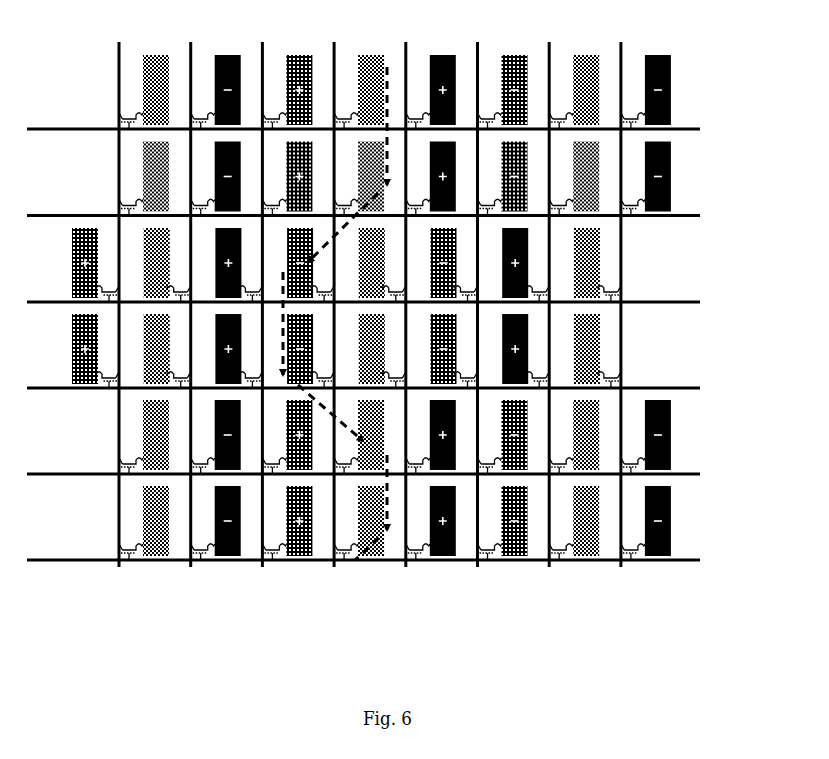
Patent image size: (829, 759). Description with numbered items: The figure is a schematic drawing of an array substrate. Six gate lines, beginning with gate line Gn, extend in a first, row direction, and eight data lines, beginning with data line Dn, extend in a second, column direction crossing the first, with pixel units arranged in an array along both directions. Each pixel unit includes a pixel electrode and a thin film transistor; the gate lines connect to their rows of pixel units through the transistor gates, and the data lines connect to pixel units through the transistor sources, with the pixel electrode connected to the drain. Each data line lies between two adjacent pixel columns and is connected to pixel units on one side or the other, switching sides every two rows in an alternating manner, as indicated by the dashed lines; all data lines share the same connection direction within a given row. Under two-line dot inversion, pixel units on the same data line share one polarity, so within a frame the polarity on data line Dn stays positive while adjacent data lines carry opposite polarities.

The data line Dn is at (120, 293).
The gate line Gn is at (384, 130).